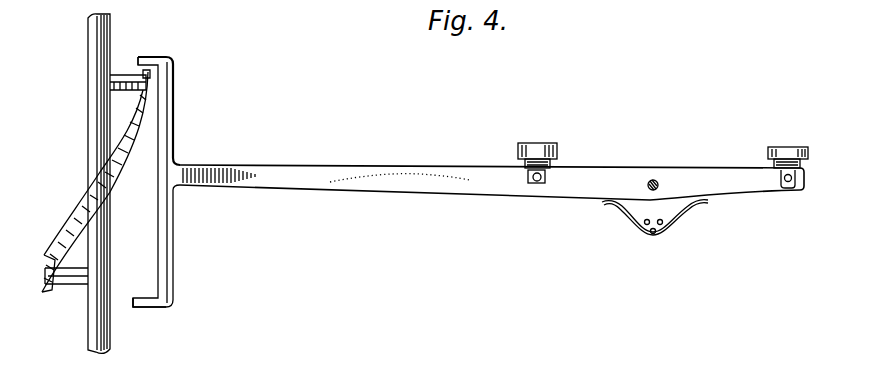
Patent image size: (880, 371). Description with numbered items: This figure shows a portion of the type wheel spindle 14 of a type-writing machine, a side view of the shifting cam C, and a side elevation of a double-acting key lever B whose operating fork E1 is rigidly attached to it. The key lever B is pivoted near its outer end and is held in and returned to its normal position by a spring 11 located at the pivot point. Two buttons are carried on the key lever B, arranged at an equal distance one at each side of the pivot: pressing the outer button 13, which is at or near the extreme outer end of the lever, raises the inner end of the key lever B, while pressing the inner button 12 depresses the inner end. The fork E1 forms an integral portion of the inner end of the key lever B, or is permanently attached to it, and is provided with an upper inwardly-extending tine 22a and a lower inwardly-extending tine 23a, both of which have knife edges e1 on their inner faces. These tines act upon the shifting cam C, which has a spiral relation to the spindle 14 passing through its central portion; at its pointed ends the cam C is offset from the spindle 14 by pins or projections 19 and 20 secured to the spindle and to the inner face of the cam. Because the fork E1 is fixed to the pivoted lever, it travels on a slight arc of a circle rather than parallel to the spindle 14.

The spindle 14 is at (88, 148).
The pin or projection 19 is at (108, 91).
The pin or projection 20 is at (84, 276).
The shifting cam C is at (110, 178).
The fork E1 is at (174, 130).
The upper inwardly-extending tine 22a is at (165, 58).
The lower inwardly-extending tine 23a is at (152, 308).
The knife edge e1 is at (138, 62).
The key lever B is at (700, 167).
The inner button 12 is at (545, 143).
The outer button 13 is at (787, 147).
The spring 11 is at (636, 216).